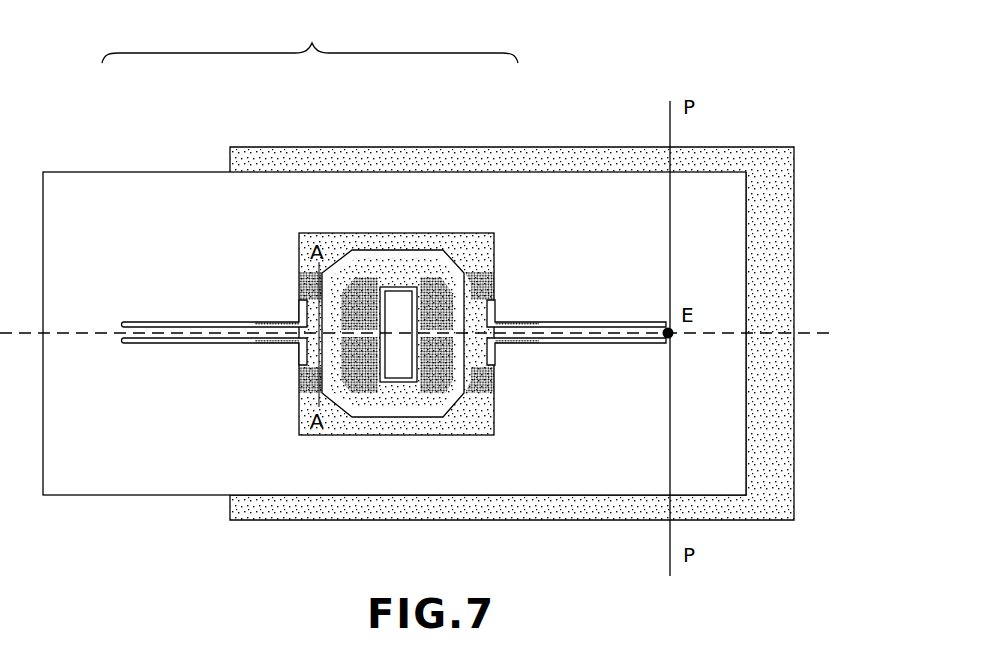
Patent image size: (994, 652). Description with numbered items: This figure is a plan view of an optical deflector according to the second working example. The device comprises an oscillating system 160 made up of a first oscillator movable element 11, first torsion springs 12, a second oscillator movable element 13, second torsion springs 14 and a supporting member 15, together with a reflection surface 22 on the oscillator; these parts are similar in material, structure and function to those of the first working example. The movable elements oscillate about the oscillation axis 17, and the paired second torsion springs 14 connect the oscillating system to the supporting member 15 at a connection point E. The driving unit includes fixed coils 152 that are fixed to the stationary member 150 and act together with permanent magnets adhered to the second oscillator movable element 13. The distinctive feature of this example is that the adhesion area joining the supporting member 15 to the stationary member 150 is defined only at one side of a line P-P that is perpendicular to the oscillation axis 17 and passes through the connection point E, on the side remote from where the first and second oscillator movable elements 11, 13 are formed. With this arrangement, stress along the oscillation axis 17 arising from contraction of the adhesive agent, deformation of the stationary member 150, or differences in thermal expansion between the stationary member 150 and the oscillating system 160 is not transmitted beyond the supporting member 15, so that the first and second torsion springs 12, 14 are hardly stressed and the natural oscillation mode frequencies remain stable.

The first oscillator movable element 11 is at (380, 282).
The first torsion springs 12 is at (363, 300).
The second oscillator movable element 13 is at (407, 290).
The second torsion springs 14 is at (205, 322).
The supporting member 15 is at (148, 186).
The oscillation axis 17 is at (836, 333).
The reflection surface 22 is at (395, 257).
The stationary member 150 is at (590, 147).
The fixed coils 152 is at (478, 393).
The oscillating system 160 is at (310, 38).